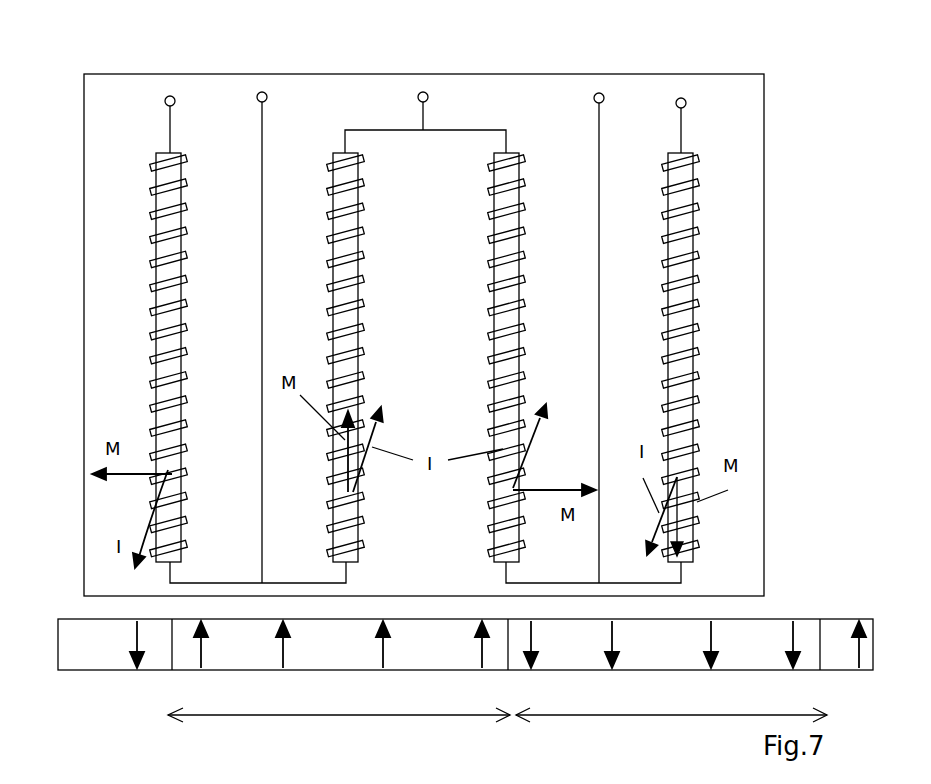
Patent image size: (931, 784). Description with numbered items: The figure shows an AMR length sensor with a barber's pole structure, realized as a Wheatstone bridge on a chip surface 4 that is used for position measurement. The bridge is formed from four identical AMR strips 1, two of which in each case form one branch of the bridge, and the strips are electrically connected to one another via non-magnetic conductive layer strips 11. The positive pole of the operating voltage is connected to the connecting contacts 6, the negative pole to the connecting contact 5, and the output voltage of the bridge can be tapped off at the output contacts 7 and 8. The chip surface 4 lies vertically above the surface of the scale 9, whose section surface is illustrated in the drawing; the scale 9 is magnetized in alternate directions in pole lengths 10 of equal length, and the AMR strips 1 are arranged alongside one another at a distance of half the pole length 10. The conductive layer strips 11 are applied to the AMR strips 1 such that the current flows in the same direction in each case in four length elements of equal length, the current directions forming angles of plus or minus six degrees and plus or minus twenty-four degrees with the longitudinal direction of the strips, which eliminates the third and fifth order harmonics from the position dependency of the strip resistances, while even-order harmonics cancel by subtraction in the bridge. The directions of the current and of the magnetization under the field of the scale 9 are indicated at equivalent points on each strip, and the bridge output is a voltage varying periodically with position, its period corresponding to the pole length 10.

The AMR strip 1 is at (163, 232).
The chip surface 4 is at (759, 200).
The connecting contact 5 is at (421, 92).
The connecting contacts 6 is at (167, 96).
The output contact 7 is at (259, 93).
The output contact 8 is at (601, 93).
The scale 9 is at (810, 620).
The pole length 10 is at (497, 707).
The conductive layer strips 11 is at (180, 322).